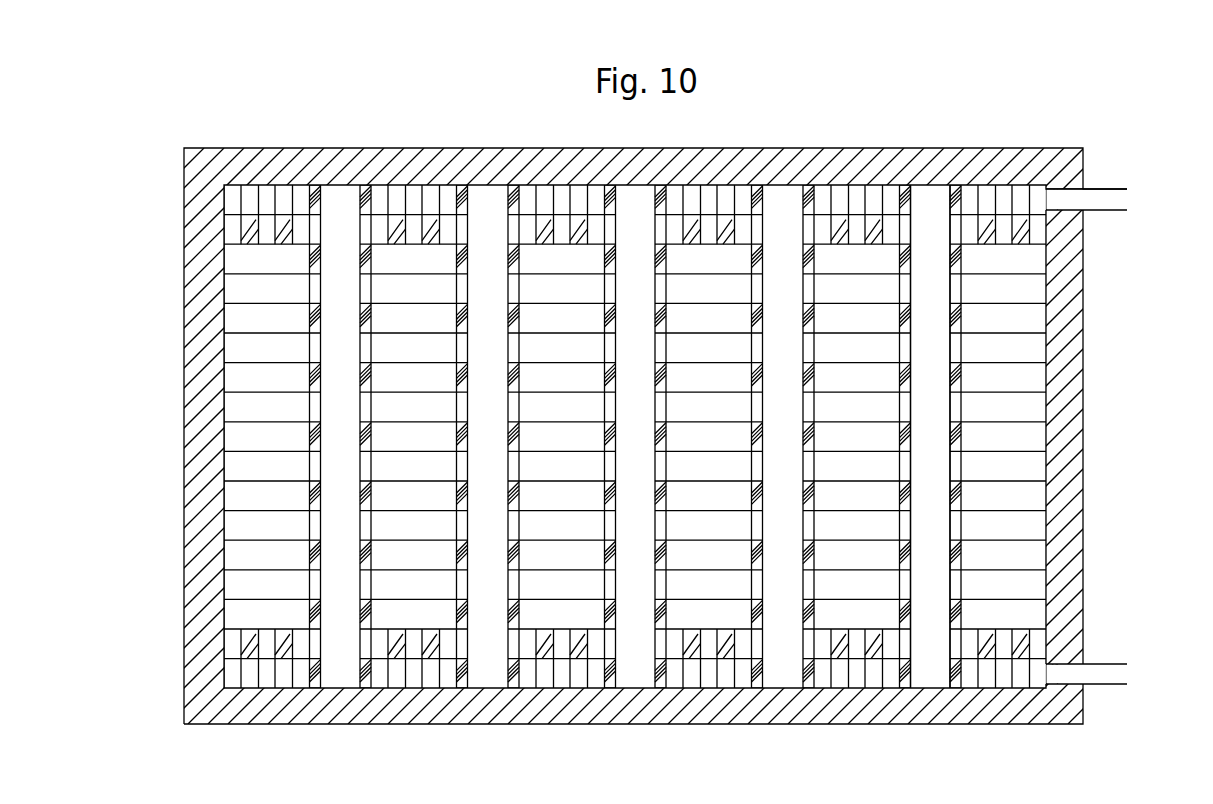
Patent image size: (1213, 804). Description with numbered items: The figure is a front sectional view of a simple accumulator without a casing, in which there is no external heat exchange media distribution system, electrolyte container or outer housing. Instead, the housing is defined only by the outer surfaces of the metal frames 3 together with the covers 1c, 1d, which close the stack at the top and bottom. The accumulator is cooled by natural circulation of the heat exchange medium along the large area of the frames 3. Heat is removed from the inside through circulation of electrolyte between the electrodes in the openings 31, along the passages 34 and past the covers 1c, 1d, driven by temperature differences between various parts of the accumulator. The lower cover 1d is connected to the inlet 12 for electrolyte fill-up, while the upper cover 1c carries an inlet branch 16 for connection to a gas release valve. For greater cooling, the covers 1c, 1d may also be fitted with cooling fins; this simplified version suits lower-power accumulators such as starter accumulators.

The cover 1c is at (1083, 152).
The cover 1d is at (1072, 703).
The frame 3 is at (1073, 323).
The inlet 12 is at (1120, 673).
The inlet branch 16 is at (1120, 202).
The opening 31 is at (1007, 623).
The passage 34 is at (933, 322).